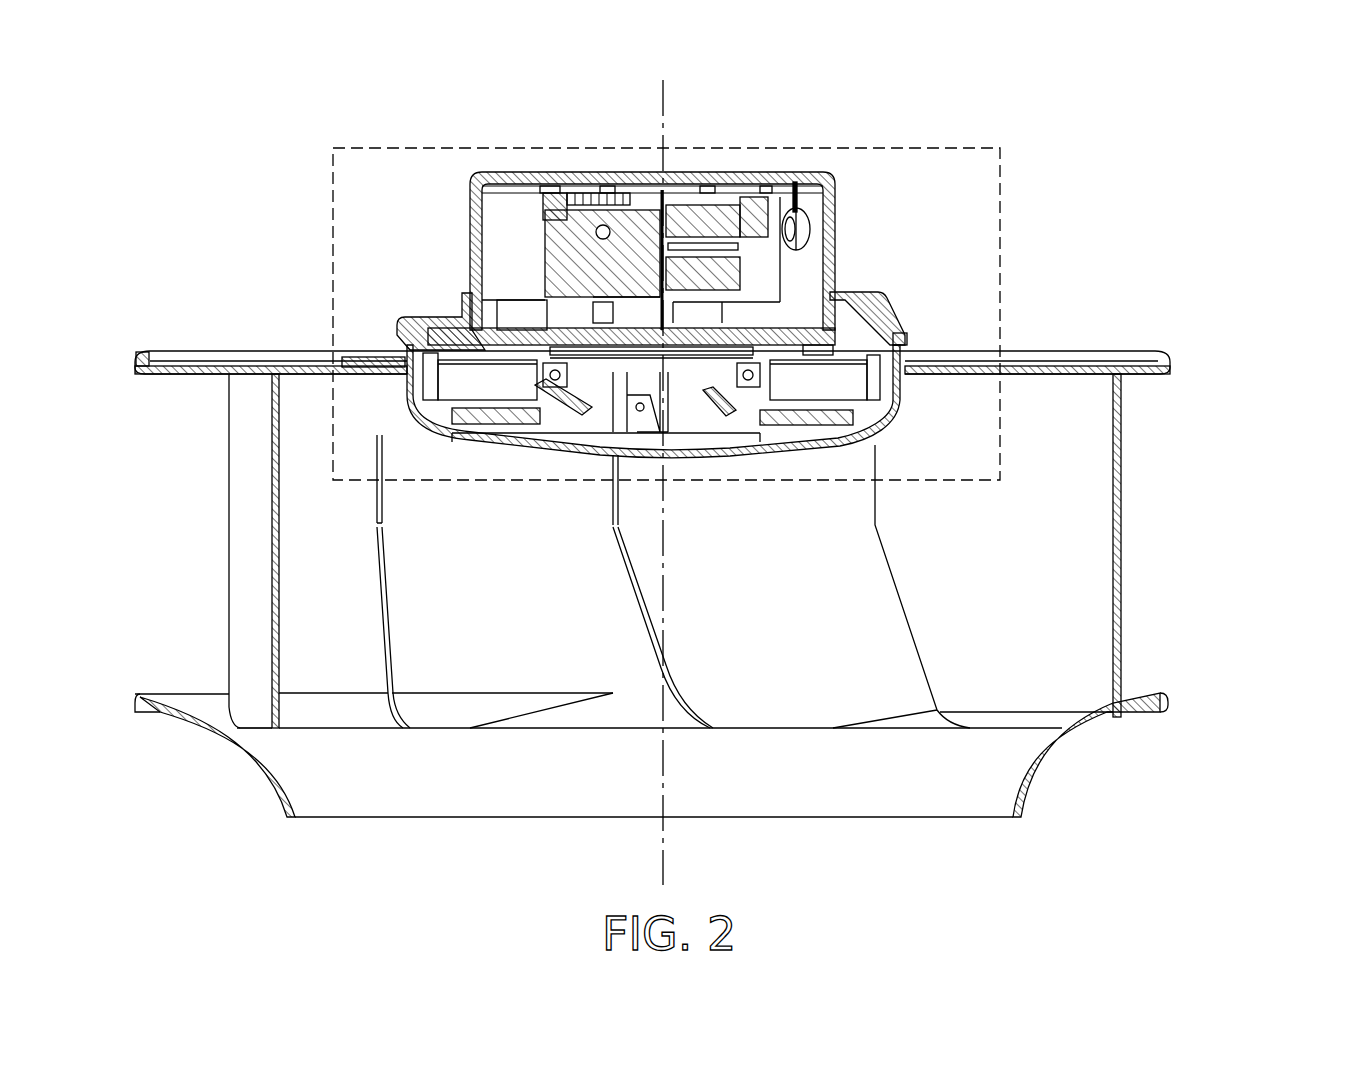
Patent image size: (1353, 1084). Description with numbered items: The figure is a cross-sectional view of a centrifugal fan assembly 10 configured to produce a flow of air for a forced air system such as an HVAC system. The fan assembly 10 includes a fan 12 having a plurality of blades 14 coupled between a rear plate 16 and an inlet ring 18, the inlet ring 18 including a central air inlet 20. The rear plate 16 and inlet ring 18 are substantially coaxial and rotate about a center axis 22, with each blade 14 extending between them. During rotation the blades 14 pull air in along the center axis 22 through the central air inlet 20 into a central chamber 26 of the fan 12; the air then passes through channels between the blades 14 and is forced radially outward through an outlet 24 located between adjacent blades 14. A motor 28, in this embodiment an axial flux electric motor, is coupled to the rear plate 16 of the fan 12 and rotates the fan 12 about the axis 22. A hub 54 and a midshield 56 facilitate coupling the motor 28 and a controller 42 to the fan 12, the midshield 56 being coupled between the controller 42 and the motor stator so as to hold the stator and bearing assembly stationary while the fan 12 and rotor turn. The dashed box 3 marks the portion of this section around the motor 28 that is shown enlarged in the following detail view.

The box 3 is at (967, 146).
The centrifugal fan assembly 10 is at (706, 466).
The fan 12 is at (706, 598).
The blades 14 is at (228, 487).
The rear plate 16 is at (173, 366).
The inlet ring 18 is at (1038, 762).
The central air inlet 20 is at (960, 807).
The center axis 22 is at (663, 107).
The outlet 24 is at (332, 663).
The central chamber 26 is at (577, 680).
The motor 28 is at (860, 410).
The controller 42 is at (803, 267).
The hub 54 is at (903, 353).
The midshield 56 is at (452, 313).